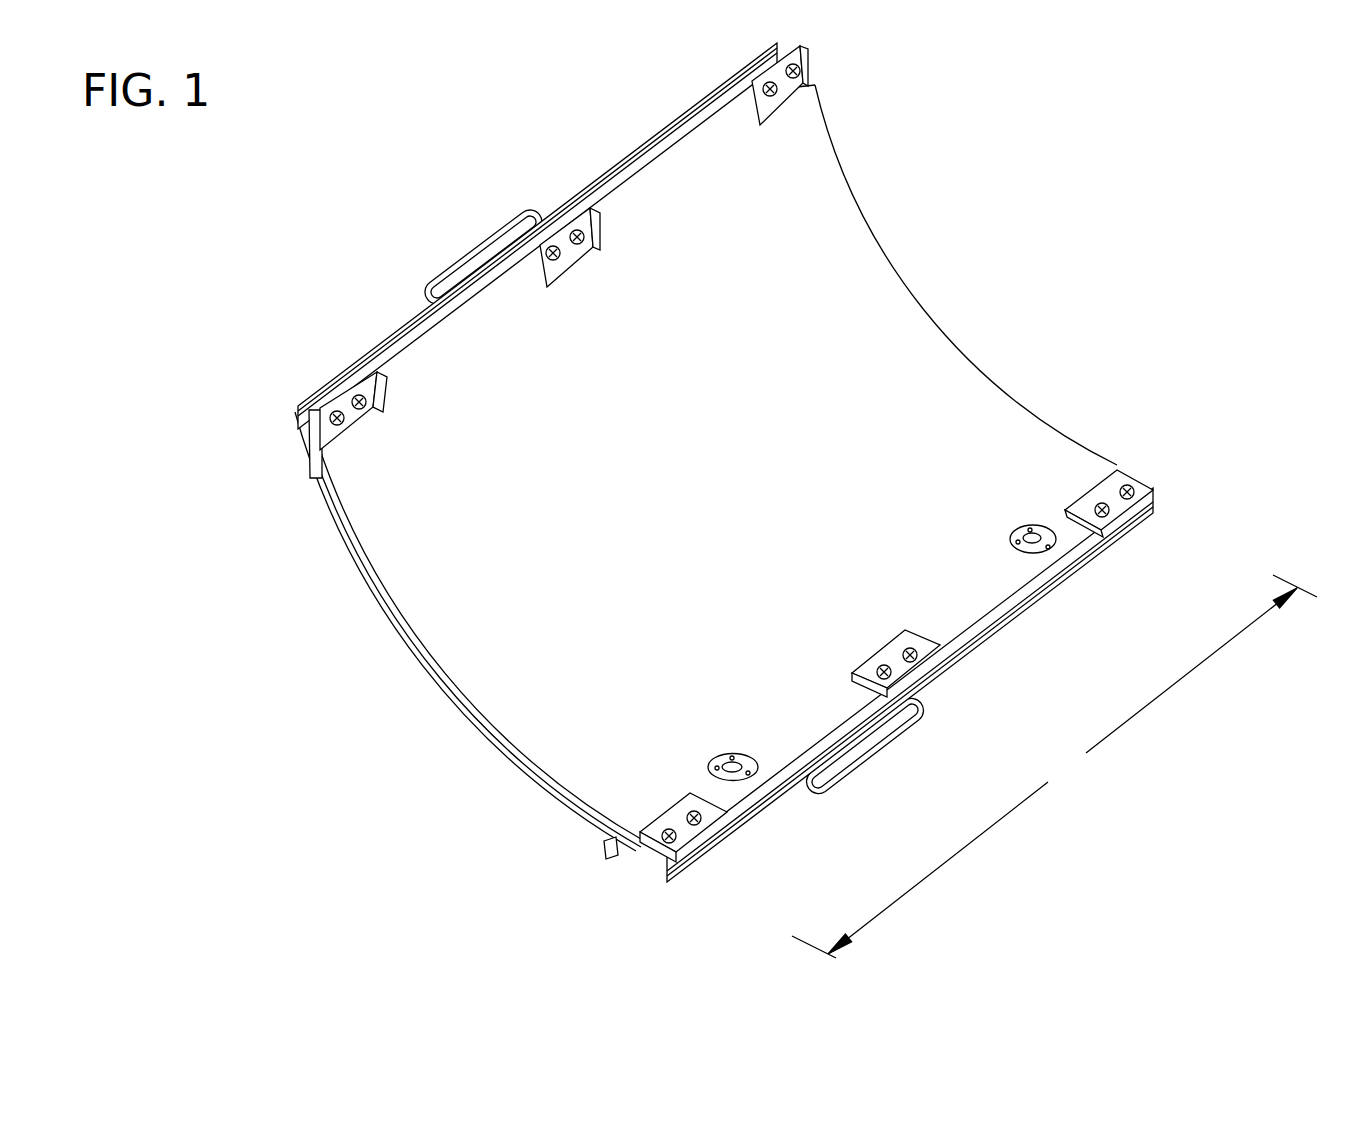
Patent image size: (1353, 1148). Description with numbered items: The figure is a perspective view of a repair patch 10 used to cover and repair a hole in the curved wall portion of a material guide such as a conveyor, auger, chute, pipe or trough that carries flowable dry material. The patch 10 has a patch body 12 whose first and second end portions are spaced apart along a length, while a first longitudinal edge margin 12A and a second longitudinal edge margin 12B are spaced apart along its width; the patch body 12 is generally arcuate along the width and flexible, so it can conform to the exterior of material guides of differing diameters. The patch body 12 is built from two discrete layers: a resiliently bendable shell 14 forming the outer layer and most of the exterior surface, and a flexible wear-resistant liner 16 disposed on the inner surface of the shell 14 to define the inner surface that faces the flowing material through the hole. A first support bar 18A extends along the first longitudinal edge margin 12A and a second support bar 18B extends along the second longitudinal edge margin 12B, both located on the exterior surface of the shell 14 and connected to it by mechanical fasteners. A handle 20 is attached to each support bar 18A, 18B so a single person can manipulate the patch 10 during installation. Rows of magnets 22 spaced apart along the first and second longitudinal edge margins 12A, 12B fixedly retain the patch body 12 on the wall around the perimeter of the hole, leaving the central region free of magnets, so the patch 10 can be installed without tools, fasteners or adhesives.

The repair patch 10 is at (758, 504).
The patch body 12 is at (725, 504).
The first longitudinal edge margin 12A is at (997, 620).
The second longitudinal edge margin 12B is at (648, 152).
The shell 14 is at (426, 675).
The liner 16 is at (474, 717).
The first support bar 18A is at (613, 854).
The second support bar 18B is at (307, 437).
The handle 20 is at (462, 266).
The magnet 22 is at (804, 68).